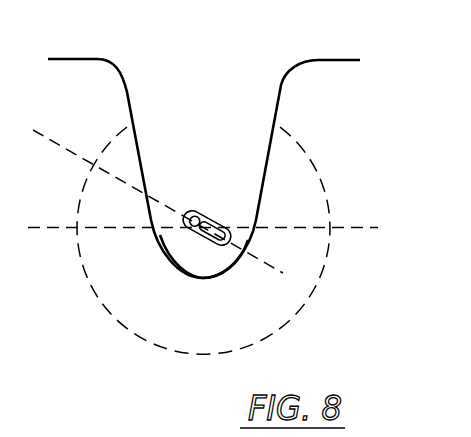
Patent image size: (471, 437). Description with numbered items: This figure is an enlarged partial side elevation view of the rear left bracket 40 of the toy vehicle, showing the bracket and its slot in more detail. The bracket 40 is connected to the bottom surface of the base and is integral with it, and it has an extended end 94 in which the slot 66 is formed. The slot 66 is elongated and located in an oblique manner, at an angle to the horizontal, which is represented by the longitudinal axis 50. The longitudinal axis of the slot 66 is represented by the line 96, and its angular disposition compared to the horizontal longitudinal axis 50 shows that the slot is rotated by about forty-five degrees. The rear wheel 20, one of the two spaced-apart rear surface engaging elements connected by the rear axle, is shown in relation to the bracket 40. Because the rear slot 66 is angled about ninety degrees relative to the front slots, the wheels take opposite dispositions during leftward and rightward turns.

The left bracket 40 is at (223, 78).
The rear wheel 20 is at (306, 162).
The longitudinal axis 50 is at (50, 227).
The line 96 is at (47, 138).
The slot 66 is at (203, 213).
The extended end 94 is at (217, 268).